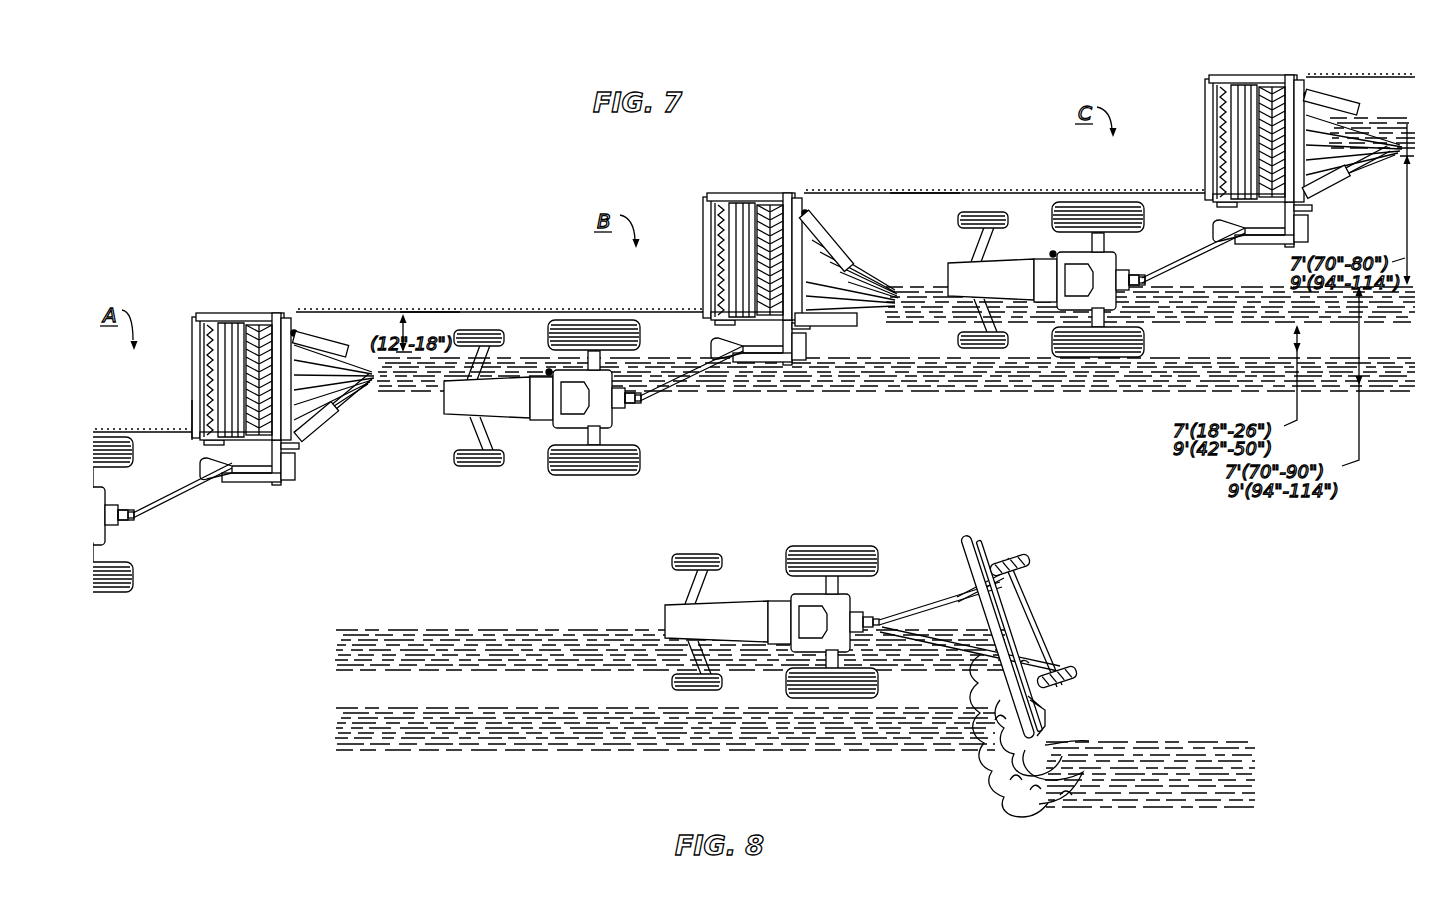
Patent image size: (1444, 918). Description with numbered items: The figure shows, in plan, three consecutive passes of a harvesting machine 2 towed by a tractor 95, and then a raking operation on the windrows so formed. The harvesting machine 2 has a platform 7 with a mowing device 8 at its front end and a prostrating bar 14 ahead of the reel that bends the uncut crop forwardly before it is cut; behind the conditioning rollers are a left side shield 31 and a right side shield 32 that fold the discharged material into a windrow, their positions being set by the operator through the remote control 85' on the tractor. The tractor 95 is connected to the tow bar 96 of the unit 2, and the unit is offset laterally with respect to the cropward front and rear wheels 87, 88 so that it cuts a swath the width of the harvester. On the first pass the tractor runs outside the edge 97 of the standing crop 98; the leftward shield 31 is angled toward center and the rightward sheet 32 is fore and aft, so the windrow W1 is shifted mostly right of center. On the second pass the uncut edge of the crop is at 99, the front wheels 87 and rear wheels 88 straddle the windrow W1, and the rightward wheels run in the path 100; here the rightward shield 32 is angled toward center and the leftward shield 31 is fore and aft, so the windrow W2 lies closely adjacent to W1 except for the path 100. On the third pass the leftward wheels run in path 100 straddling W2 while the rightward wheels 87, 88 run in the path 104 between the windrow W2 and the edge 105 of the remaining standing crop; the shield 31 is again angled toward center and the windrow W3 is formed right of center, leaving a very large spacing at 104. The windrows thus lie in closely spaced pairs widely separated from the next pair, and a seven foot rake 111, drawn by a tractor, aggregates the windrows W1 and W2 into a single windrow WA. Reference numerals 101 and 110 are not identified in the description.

In FIG. 7, the harvesting machine 2 is at (246, 318).
In FIG. 7, the platform 7 is at (722, 222).
In FIG. 7, the mowing device 8 is at (722, 292).
In FIG. 7, the prostrating bar 14 is at (200, 316).
In FIG. 7, the left side shield 31 is at (316, 410).
In FIG. 7, the right side shield 32 is at (338, 346).
In FIG. 7, the remote control lever 85' is at (782, 299).
In FIG. 7, the front wheels 87 is at (124, 443).
In FIG. 7, the rear wheels 88 is at (136, 574).
In FIG. 7, the tractor 95 is at (124, 541).
In FIG. 7, the tow bar 96 is at (196, 488).
In FIG. 7, the edge of the standing crop 97 is at (162, 436).
In FIG. 7, the standing crop 98 is at (192, 412).
In FIG. 7, the uncut edge of the crop 99 is at (428, 318).
In FIG. 7, the wheel path 100 is at (388, 322).
In FIG. 7, the crop edge 101 is at (868, 206).
In FIG. 7, the wheel path 104 is at (1383, 213).
In FIG. 7, the edge of the remaining standing crop 105 is at (920, 208).
In FIG. 8, the tractor 110 is at (658, 603).
In FIG. 8, the rake 111 is at (1010, 628).
In FIG. 7, the first windrow W1 is at (410, 410).
In FIG. 8, the first windrow W1 is at (494, 742).
In FIG. 7, the second windrow W2 is at (924, 290).
In FIG. 8, the second windrow W2 is at (492, 633).
In FIG. 7, the third windrow W3 is at (1403, 122).
In FIG. 8, the aggregated windrow WA is at (1192, 738).